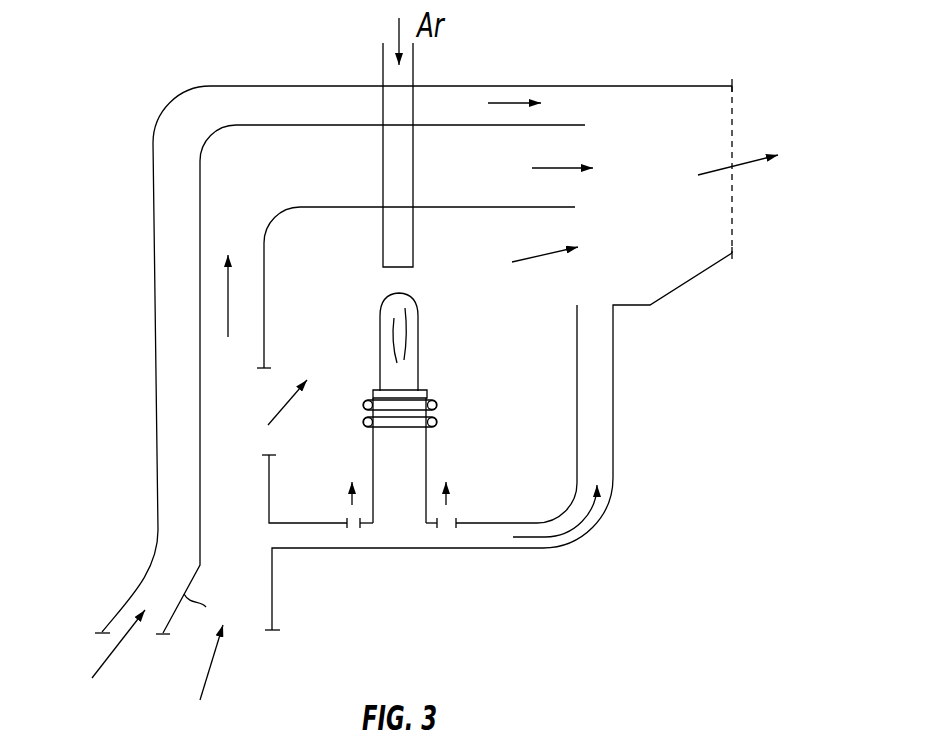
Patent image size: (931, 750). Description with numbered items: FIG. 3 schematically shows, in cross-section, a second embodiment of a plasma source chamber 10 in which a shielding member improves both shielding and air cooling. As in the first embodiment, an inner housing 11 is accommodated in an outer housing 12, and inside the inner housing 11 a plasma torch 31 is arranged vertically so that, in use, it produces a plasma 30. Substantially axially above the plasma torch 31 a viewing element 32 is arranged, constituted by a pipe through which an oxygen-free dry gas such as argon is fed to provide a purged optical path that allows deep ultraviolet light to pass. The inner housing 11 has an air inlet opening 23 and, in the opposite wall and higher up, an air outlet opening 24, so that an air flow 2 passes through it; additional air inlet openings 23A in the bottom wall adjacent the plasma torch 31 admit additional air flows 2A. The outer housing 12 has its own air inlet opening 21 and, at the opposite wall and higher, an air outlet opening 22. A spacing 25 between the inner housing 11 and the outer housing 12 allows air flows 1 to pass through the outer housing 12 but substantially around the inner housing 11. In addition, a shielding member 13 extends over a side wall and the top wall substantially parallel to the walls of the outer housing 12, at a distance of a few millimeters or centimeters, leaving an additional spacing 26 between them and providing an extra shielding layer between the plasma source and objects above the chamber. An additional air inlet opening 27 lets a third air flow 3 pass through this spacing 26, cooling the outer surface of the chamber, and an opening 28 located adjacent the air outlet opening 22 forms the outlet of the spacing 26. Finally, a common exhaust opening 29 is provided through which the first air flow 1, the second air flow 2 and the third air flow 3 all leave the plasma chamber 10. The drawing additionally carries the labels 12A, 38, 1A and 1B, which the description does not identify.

The plasma source chamber 10 is at (423, 356).
The inner housing 11 is at (266, 458).
The outer housing 12 is at (200, 205).
The shielding member 13 is at (157, 388).
The wall bottom opening 12A is at (220, 606).
The air inlet opening 21 is at (247, 572).
The air outlet opening 22 is at (625, 159).
The air inlet opening 23 is at (272, 406).
The air inlet openings 23A is at (352, 526).
The air outlet opening 24 is at (587, 292).
The spacing 25 is at (257, 159).
The additional spacing 26 is at (208, 132).
The additional air inlet opening 27 is at (192, 562).
The opening 28 is at (615, 119).
The common air outlet opening 29 is at (777, 116).
The plasma 30 is at (422, 352).
The plasma torch 31 is at (427, 438).
The viewing element 32 is at (414, 46).
The coil heater 38 is at (433, 403).
The air flow 1 is at (227, 277).
The first gas inlet flow 1A is at (203, 682).
The first gas outlet flow 1B is at (738, 166).
The air flow 2 is at (280, 412).
The additional air flows 2A is at (448, 500).
The additional air flow 3 is at (508, 103).